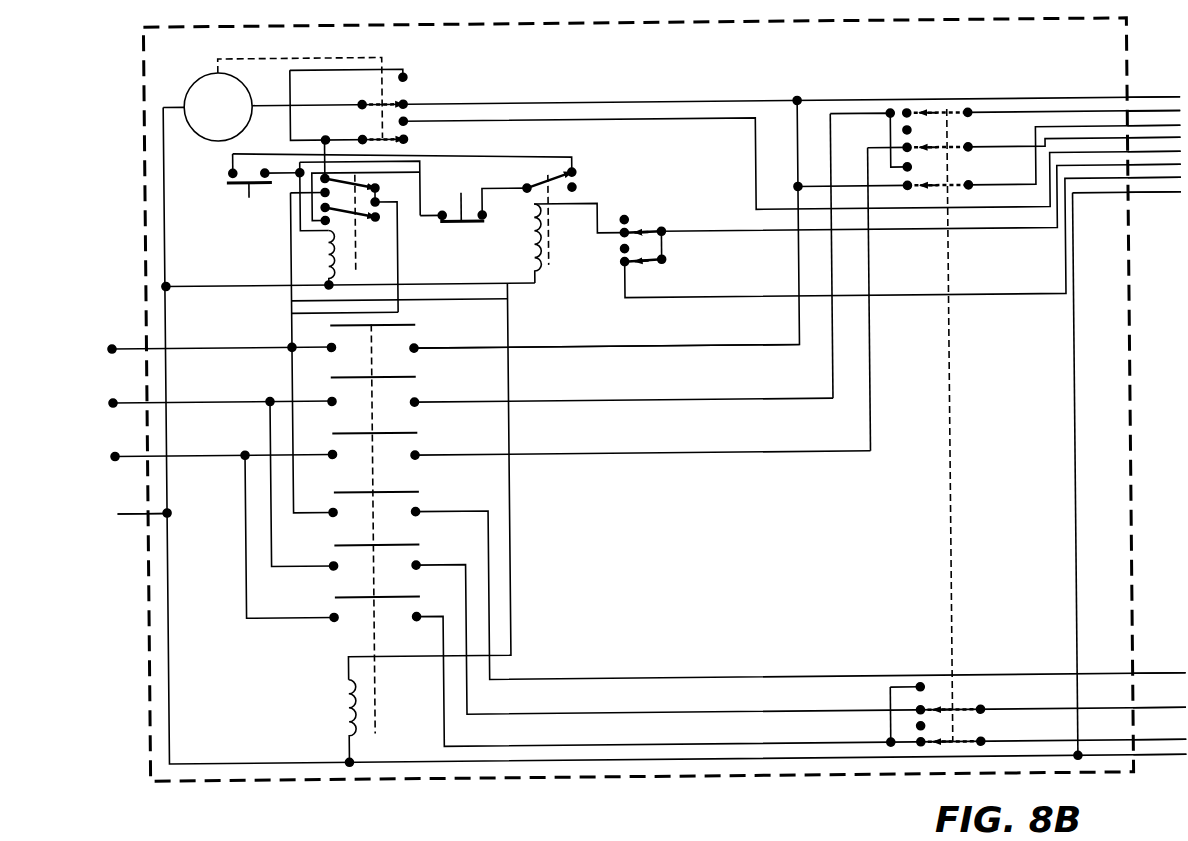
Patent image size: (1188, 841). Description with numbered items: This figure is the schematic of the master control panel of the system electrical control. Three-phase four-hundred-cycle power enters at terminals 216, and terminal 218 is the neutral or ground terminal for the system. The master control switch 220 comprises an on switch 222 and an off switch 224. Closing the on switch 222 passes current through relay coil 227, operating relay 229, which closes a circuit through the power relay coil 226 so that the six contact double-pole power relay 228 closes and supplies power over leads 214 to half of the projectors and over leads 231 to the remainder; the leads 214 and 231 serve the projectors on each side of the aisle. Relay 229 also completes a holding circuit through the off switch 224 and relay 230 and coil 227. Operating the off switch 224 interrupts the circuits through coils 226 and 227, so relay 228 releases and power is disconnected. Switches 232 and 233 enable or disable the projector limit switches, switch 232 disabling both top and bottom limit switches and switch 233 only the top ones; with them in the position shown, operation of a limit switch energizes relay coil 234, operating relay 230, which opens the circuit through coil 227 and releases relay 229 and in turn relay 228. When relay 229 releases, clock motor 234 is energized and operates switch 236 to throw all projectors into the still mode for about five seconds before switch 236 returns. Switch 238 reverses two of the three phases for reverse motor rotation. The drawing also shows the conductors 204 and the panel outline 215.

The conductors 204 is at (1164, 185).
The leads 214 is at (1145, 125).
The control unit 215 is at (140, 133).
The terminals 216 is at (110, 451).
The neutral or ground terminal 218 is at (137, 512).
The master control switch 220 is at (209, 213).
The on switch 222 is at (269, 184).
The off switch 224 is at (472, 221).
The power relay coil 226 is at (350, 680).
The relay coil 227 is at (329, 250).
The six contact double-pole power relay 228 is at (440, 486).
The relay 229 is at (365, 182).
The relay 230 is at (542, 172).
The leads 231 is at (1154, 742).
The switch 232 is at (637, 229).
The switch 233 is at (648, 262).
The relay coil / clock motor 234 is at (199, 74).
The switch 236 is at (391, 135).
The switch 238 is at (940, 195).